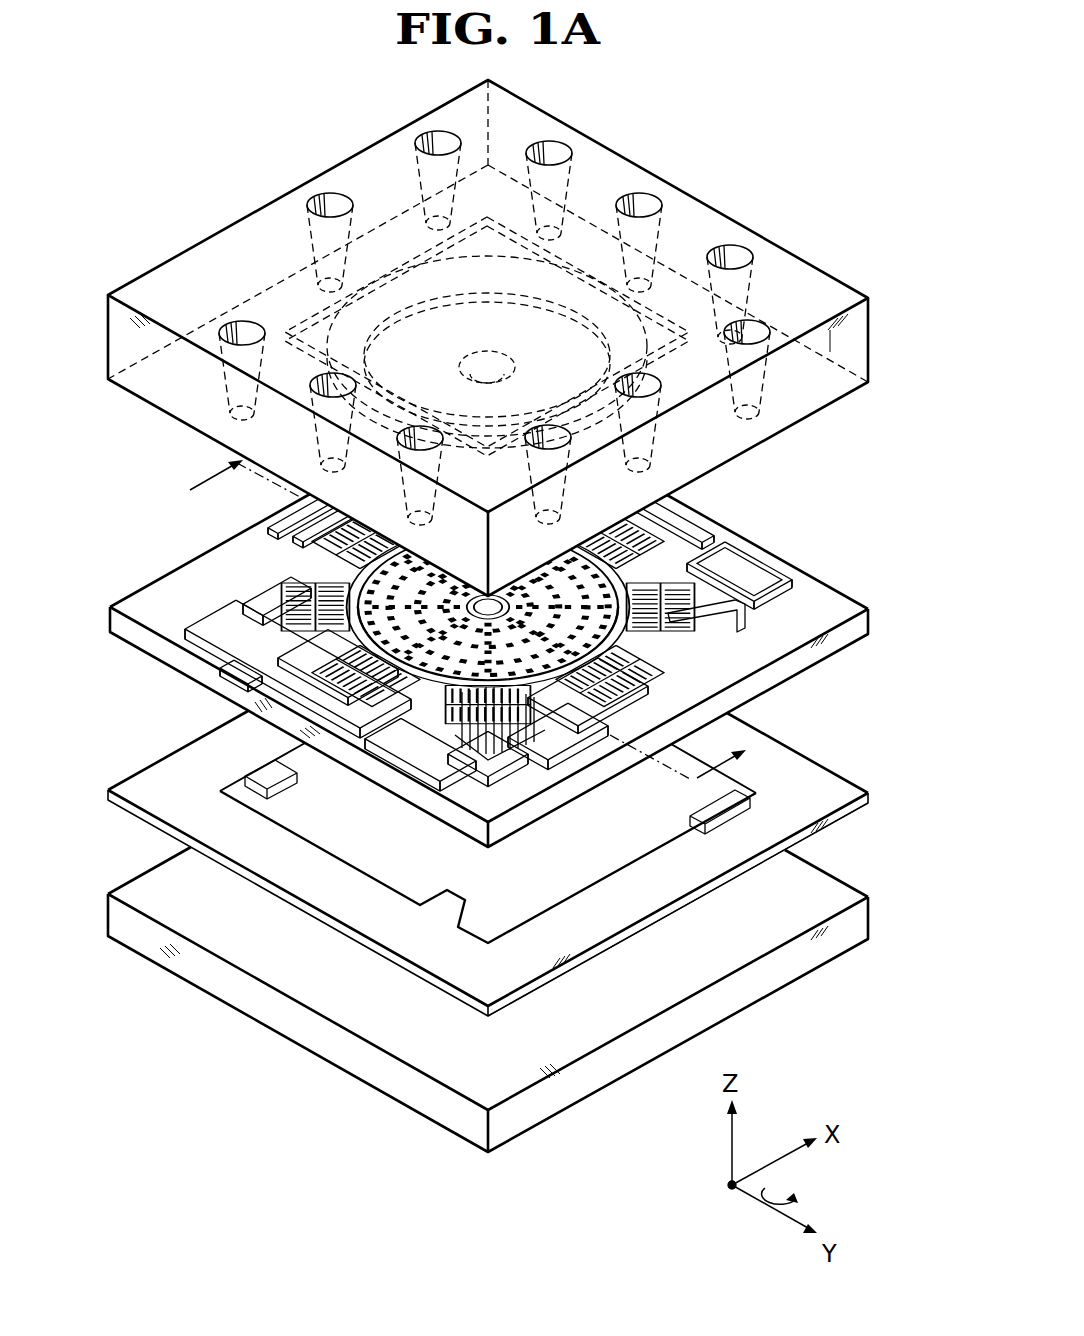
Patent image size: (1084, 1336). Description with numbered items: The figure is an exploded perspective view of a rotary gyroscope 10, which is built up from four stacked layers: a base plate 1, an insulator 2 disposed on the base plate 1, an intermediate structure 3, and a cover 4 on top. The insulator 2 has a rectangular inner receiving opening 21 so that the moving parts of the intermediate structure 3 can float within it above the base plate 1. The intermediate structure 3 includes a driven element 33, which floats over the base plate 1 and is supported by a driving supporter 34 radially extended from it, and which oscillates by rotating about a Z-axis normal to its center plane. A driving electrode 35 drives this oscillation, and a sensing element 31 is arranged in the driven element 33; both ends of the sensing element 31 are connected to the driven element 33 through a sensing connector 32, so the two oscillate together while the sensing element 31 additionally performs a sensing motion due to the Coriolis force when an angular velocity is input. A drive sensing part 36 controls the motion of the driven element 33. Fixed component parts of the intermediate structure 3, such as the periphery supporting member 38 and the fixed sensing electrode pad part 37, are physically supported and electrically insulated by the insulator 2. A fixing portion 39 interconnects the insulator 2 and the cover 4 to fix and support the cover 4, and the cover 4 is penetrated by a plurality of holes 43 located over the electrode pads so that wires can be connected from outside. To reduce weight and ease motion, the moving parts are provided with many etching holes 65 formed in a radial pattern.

The rotary gyroscope 10 is at (226, 129).
The base plate 1 is at (822, 896).
The insulator 2 is at (818, 779).
The inner receiving opening 21 is at (600, 858).
The intermediate structure 3 is at (820, 590).
The sensing element 31 is at (650, 548).
The sensing connector 32 is at (548, 742).
The driven element 33 is at (700, 566).
The driving supporter 34 is at (240, 596).
The driving electrode 35 is at (262, 655).
The drive sensing part 36 is at (416, 748).
The fixed sensing electrode pad part 37 is at (232, 630).
The periphery supporting member 38 is at (836, 612).
The fixing portion 39 is at (490, 756).
The etching holes 65 is at (662, 630).
The cover 4 is at (792, 275).
The holes 43 is at (730, 234).